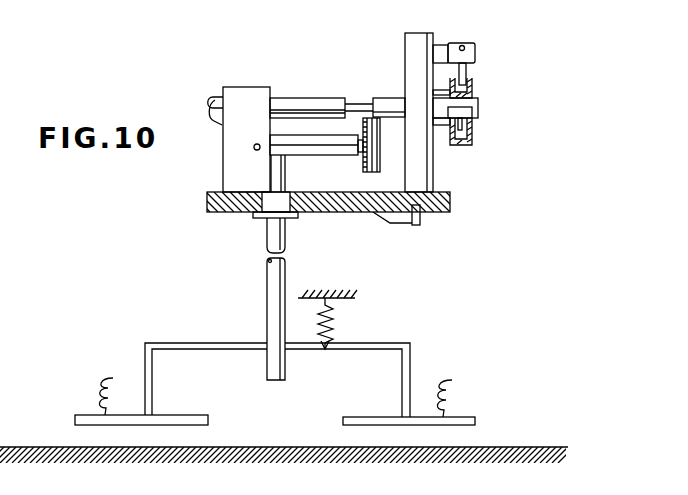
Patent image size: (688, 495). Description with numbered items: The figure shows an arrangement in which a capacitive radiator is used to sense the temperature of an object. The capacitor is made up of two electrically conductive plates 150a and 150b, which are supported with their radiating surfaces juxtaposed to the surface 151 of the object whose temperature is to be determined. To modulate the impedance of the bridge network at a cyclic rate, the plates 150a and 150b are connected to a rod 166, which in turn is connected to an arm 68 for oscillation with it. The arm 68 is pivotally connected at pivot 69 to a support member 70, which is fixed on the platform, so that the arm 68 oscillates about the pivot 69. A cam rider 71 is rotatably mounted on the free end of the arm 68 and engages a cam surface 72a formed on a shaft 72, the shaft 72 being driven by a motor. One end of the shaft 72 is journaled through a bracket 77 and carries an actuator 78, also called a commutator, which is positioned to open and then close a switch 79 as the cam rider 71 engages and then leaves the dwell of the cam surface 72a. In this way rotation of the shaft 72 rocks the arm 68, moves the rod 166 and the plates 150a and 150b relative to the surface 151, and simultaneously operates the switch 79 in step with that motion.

The arm 68 is at (345, 155).
The pivot 69 is at (254, 149).
The support member 70 is at (224, 148).
The cam rider 71 is at (381, 157).
The shaft 72 is at (302, 100).
The cam surface 72a is at (363, 100).
The bracket 77 is at (418, 168).
The actuator 78 is at (472, 92).
The switch 79 is at (466, 80).
The electrically conductive plate 150a is at (167, 415).
The electrically conductive plate 150b is at (455, 417).
The surface of an object 151 is at (505, 447).
The rod 166 is at (288, 270).